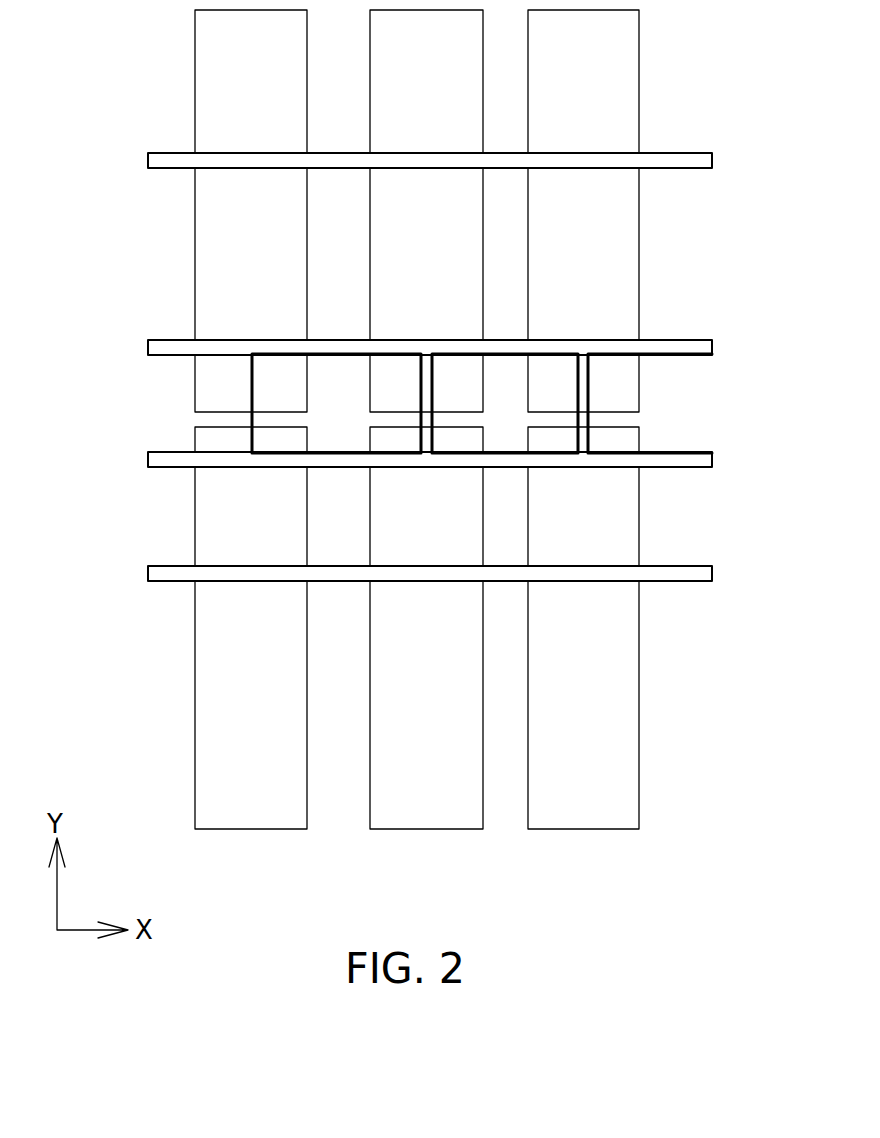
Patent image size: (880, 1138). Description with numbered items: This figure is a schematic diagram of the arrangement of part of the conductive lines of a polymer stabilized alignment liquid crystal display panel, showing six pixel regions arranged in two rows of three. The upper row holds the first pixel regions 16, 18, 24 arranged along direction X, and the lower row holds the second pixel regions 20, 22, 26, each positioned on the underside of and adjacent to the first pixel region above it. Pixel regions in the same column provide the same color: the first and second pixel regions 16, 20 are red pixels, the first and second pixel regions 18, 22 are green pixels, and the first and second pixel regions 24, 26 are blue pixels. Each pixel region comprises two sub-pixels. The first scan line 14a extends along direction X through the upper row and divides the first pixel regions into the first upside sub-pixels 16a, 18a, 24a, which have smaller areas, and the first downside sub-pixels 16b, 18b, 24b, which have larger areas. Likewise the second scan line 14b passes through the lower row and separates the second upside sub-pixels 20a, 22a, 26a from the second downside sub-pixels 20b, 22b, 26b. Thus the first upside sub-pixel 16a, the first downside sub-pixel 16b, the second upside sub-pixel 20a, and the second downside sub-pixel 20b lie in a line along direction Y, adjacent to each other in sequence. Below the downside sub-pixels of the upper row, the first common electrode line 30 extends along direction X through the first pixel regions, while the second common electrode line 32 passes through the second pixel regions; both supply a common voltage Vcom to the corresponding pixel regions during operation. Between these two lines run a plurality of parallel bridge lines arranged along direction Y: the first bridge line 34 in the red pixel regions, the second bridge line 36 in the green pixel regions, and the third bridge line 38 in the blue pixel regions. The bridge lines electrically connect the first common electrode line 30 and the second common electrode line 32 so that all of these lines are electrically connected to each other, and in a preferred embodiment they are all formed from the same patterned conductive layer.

The first scan line 14a is at (696, 152).
The second scan line 14b is at (696, 565).
The first pixel region 16 is at (191, 211).
The first upside sub-pixel 16a is at (270, 126).
The first downside sub-pixel 16b is at (251, 286).
The first pixel region 18 is at (399, 211).
The first upside sub-pixel 18a is at (448, 126).
The first downside sub-pixel 18b is at (426, 286).
The second pixel region 20 is at (191, 628).
The second upside sub-pixel 20a is at (270, 543).
The second downside sub-pixel 20b is at (251, 701).
The second pixel region 22 is at (400, 628).
The second upside sub-pixel 22a is at (448, 543).
The second downside sub-pixel 22b is at (426, 701).
The first pixel region 24 is at (633, 211).
The first upside sub-pixel 24a is at (605, 126).
The first downside sub-pixel 24b is at (583, 286).
The second pixel region 26 is at (633, 628).
The second upside sub-pixel 26a is at (605, 543).
The second downside sub-pixel 26b is at (583, 701).
The first common electrode line 30 is at (696, 339).
The second common electrode line 32 is at (696, 451).
The first bridge line 34 is at (257, 400).
The second bridge line 36 is at (434, 402).
The third bridge line 38 is at (590, 402).